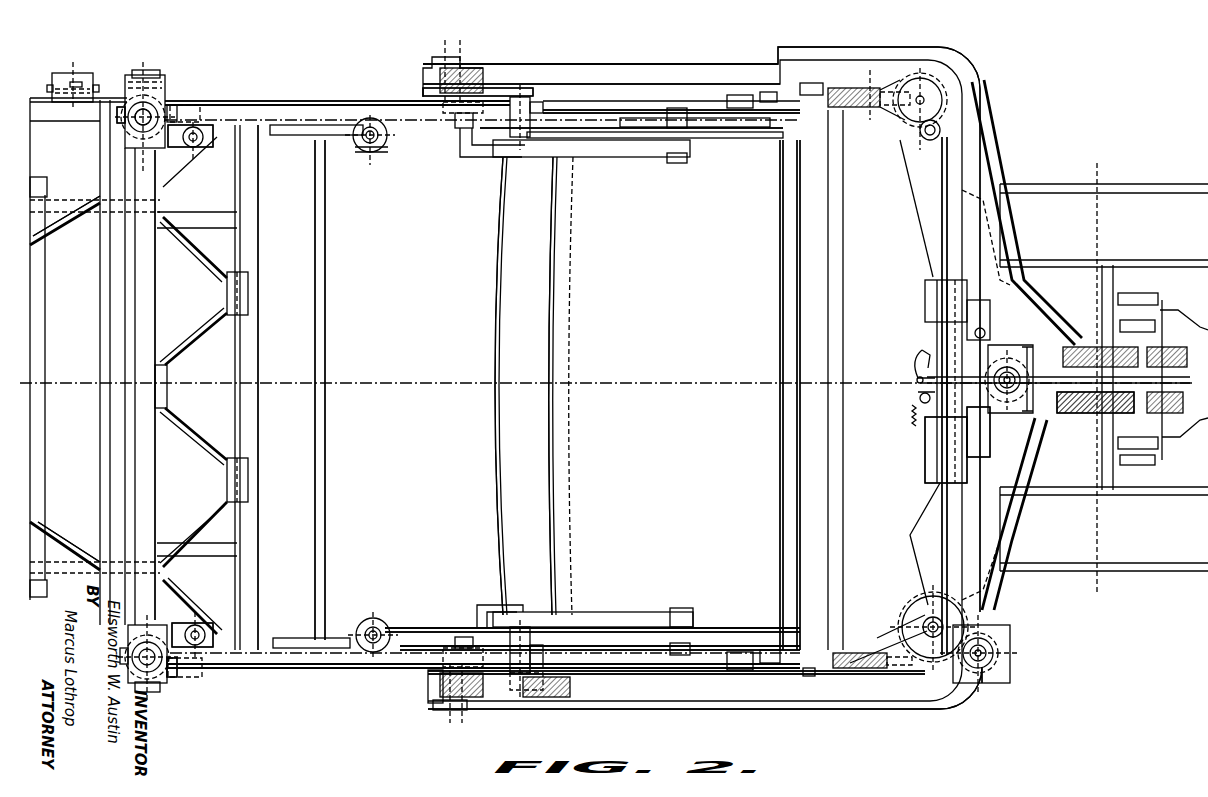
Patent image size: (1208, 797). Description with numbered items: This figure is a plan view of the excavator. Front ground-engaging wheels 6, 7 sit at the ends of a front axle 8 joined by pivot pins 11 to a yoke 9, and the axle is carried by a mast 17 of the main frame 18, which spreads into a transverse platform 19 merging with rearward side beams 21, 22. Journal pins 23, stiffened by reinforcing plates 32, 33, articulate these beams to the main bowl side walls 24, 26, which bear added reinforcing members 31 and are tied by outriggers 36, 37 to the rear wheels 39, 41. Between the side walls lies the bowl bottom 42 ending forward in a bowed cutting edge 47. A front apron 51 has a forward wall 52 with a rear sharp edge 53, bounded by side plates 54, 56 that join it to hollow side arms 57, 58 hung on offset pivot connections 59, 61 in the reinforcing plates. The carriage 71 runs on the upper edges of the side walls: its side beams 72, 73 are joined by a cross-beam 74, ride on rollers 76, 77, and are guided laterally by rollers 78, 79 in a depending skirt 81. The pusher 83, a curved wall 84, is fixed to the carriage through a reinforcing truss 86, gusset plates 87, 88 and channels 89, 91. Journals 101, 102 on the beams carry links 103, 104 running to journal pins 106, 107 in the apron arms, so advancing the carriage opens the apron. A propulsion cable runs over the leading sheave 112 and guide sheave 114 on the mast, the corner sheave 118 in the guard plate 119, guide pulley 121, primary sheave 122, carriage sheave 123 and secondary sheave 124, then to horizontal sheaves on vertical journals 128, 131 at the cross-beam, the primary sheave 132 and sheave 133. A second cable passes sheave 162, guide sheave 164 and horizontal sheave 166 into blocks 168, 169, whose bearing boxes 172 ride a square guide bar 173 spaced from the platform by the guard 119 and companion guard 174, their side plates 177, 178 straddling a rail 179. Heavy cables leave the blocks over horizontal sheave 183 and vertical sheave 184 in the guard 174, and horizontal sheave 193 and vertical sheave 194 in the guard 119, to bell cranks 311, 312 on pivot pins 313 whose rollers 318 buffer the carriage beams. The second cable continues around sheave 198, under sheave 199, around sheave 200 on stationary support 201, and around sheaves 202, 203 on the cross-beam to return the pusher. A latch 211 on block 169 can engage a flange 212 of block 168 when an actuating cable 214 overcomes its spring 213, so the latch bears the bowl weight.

The front ground-engaging wheel 6 is at (1157, 570).
The front ground-engaging wheel 7 is at (1148, 190).
The front axle 8 is at (1100, 290).
The yoke 9 is at (1170, 450).
The pivot pins 11 is at (1143, 305).
The mast 17 is at (1030, 348).
The main frame 18 is at (708, 60).
The platform 19 is at (999, 470).
The frame side beam 21 is at (700, 680).
The frame side beam 22 is at (633, 67).
The journal pin 23 is at (455, 70).
The side wall 24 is at (768, 645).
The side wall 26 is at (770, 128).
The surface reinforcement member 31 is at (580, 100).
The reinforcing plate 32 is at (515, 692).
The reinforcing plate 33 is at (495, 90).
The outrigger 36 is at (52, 240).
The outrigger 37 is at (193, 213).
The rear ground-engaging wheel 39 is at (88, 540).
The rear ground-engaging wheel 41 is at (88, 218).
The bowl bottom 42 is at (411, 525).
The cutting edge 47 is at (572, 290).
The front apron 51 is at (780, 265).
The forward wall 52 is at (780, 318).
The sharp edge 53 is at (552, 255).
The side plate 54 is at (665, 675).
The side plate 56 is at (645, 120).
The side arm 57 is at (710, 645).
The side arm 58 is at (730, 138).
The offset pivot connection 59 is at (525, 630).
The offset pivot connection 61 is at (525, 120).
The carriage 71 is at (320, 100).
The side beam 72 is at (292, 668).
The side beam 73 is at (287, 107).
The cross-beam 74 is at (160, 470).
The roller 76 is at (196, 105).
The roller 77 is at (450, 128).
The roller 78 is at (198, 148).
The roller 79 is at (385, 150).
The skirt 81 is at (350, 133).
The pusher 83 is at (262, 330).
The curved wall 84 is at (318, 240).
The reinforcing truss 86 is at (210, 310).
The side gusset plate 87 is at (268, 668).
The side gusset plate 88 is at (267, 125).
The reinforcing channel 89 is at (290, 640).
The reinforcing channel 91 is at (415, 128).
The journal 101 is at (500, 606).
The journal 102 is at (495, 160).
The operating link 103 is at (600, 615).
The operating link 104 is at (643, 147).
The journal pin 106 is at (682, 608).
The journal pin 107 is at (680, 150).
The leading sheave 112 is at (1180, 312).
The guide sheave 114 is at (1075, 355).
The corner sheave 118 is at (1005, 678).
The upright guard plate 119 is at (917, 712).
The guide pulley 121 is at (568, 697).
The primary sheave 122 is at (472, 700).
The sheave 123 is at (172, 690).
The secondary sheave 124 is at (428, 685).
The vertical journal 128 is at (150, 693).
The journal 131 is at (155, 108).
The primary sheave 132 is at (430, 88).
The sheave 133 is at (150, 95).
The sheave 162 is at (1188, 408).
The guide sheave 164 is at (1078, 415).
The horizontal sheave 166 is at (1008, 350).
The block 168 is at (932, 310).
The block 169 is at (930, 448).
The bearing box 172 is at (933, 277).
The square guide bar 173 is at (945, 205).
The companion guard 174 is at (945, 90).
The side plate 177 is at (935, 460).
The side plate 178 is at (978, 447).
The rail 179 is at (985, 172).
The horizontal sheave 183 is at (910, 148).
The vertical sheave 184 is at (848, 90).
The horizontal sheave 193 is at (905, 605).
The vertical sheave 194 is at (855, 670).
The horizontal sheave 198 is at (902, 88).
The sheave 199 is at (433, 60).
The sheave 200 is at (125, 78).
The stationary support 201 is at (58, 73).
The sheave 202 is at (117, 125).
The sheave 203 is at (175, 600).
The latch 211 is at (910, 362).
The flange 212 is at (922, 348).
The spring 213 is at (912, 408).
The actuating cable 214 is at (908, 392).
The bell crank 311 is at (817, 697).
The bell crank 312 is at (808, 83).
The pivot pin 313 is at (775, 92).
The roller 318 is at (742, 95).